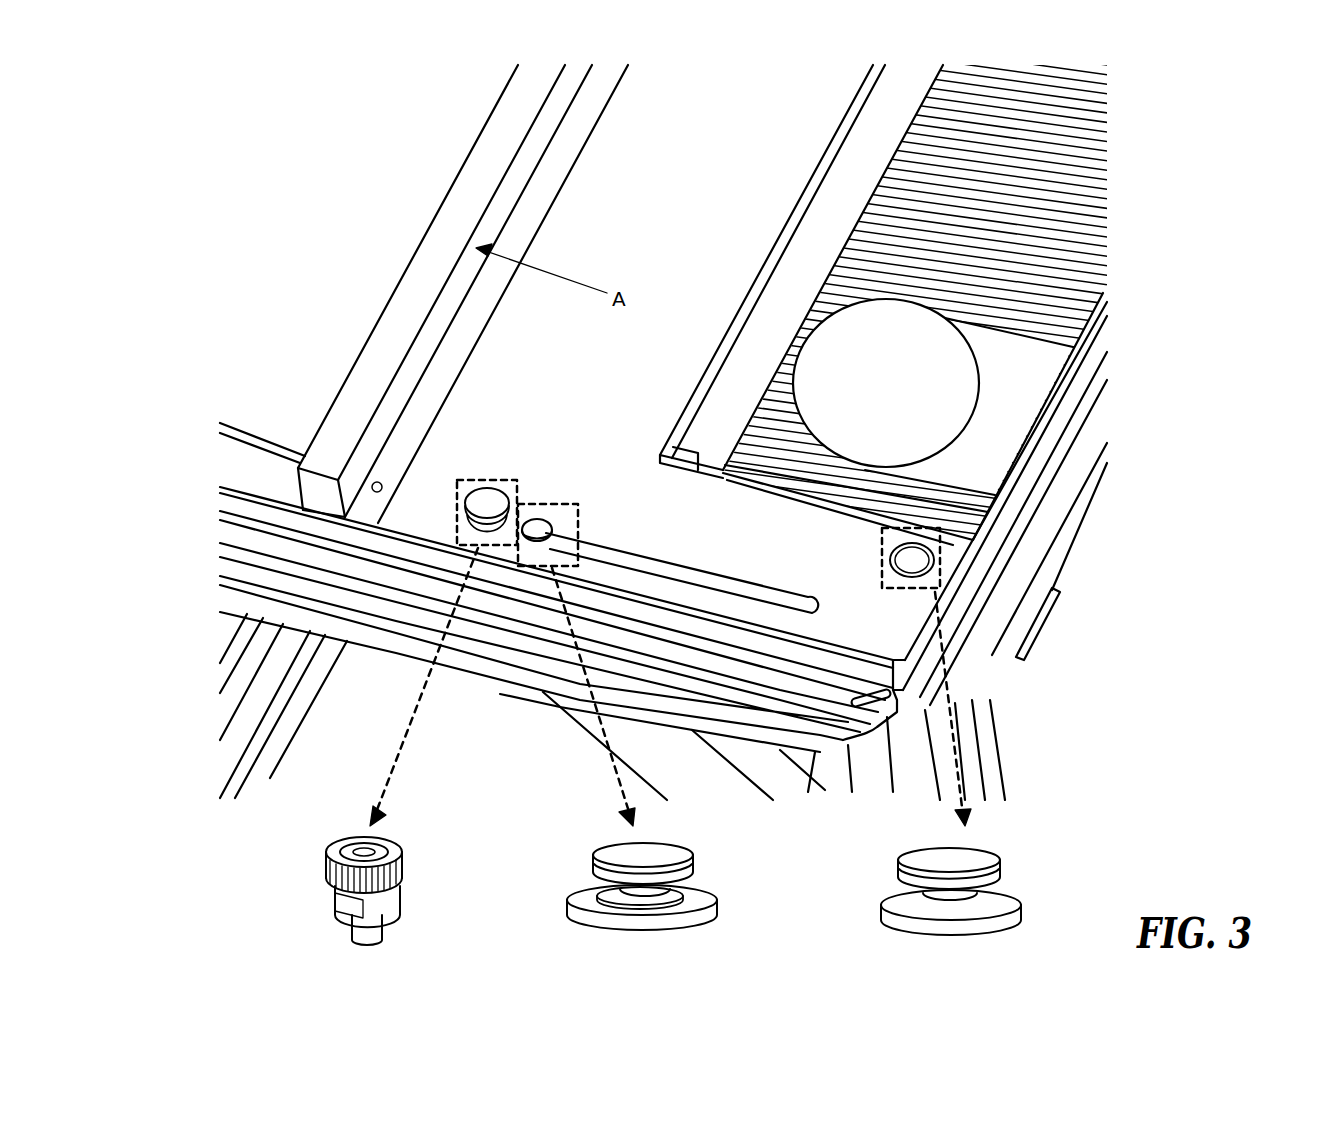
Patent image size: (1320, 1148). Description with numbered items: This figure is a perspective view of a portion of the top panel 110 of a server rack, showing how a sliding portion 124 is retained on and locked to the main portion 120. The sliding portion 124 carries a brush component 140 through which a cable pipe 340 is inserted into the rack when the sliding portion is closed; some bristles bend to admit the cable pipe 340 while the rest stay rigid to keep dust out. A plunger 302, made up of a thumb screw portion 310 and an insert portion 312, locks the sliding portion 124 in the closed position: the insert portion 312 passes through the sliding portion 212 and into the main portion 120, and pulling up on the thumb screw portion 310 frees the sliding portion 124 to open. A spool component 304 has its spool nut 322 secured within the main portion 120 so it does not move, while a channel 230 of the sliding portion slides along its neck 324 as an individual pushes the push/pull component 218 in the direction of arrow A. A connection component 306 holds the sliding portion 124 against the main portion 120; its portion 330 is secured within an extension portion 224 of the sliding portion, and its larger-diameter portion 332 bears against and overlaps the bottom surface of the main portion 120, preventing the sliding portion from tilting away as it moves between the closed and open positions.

The top panel 110 is at (236, 526).
The main portion 120 is at (363, 205).
The sliding portion 124 is at (719, 118).
The brush component 140 is at (1065, 195).
The channel 212 is at (804, 107).
The push/pull component 218 is at (510, 100).
The extension portion 224 is at (811, 567).
The channel 230 is at (358, 98).
The plunger 302 is at (327, 834).
The spool component 304 is at (613, 838).
The connection component 306 is at (906, 840).
The thumb screw portion 310 is at (410, 855).
The insert portion 312 is at (360, 930).
The spool nut 322 is at (585, 921).
The neck 324 is at (680, 905).
The portion 330 is at (990, 856).
The portion 332 is at (895, 920).
The cable pipe 340 is at (901, 387).